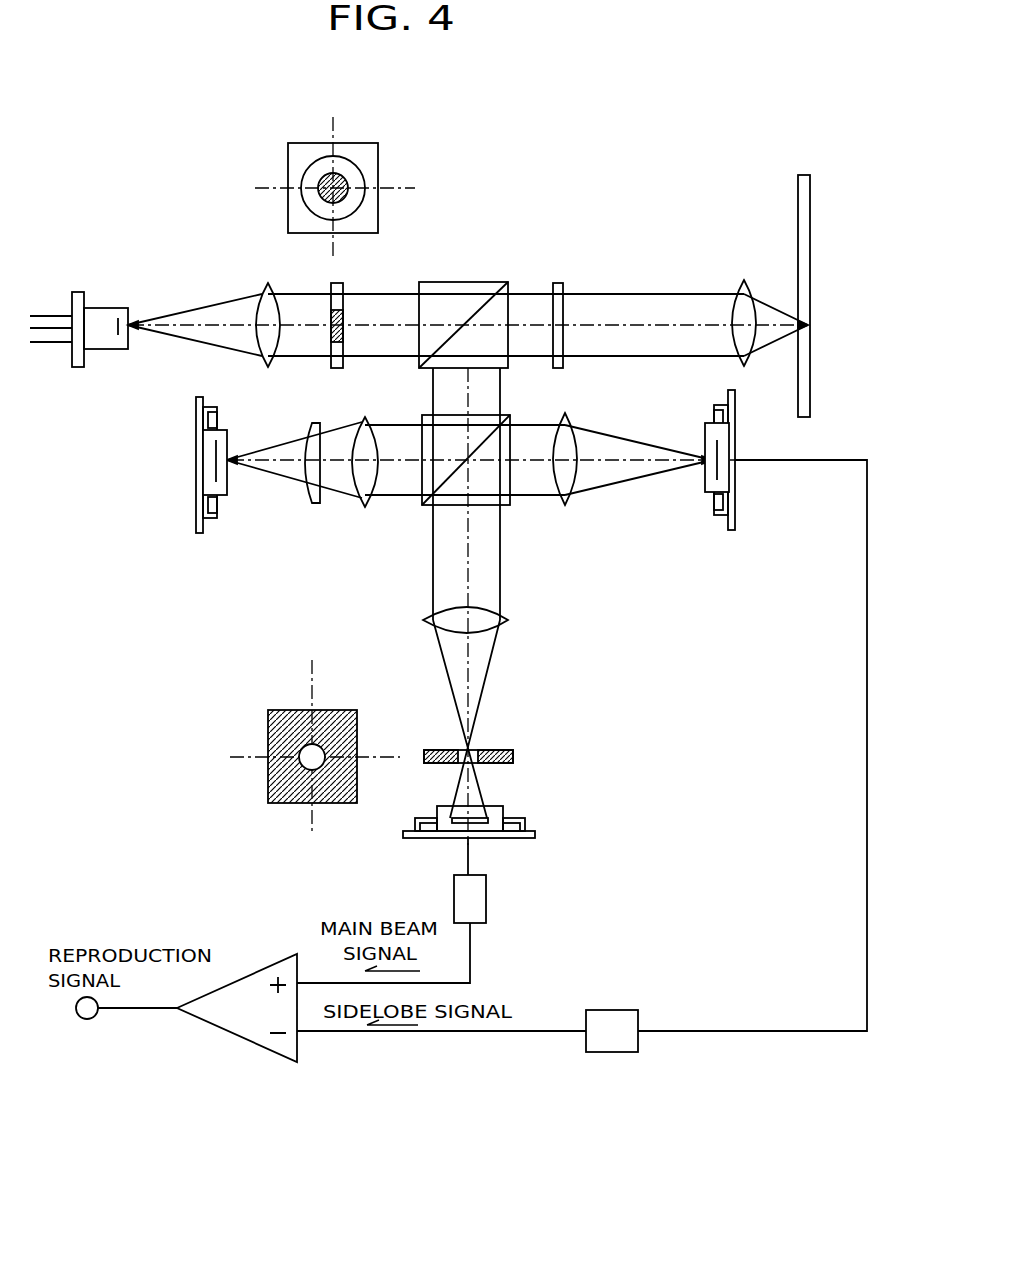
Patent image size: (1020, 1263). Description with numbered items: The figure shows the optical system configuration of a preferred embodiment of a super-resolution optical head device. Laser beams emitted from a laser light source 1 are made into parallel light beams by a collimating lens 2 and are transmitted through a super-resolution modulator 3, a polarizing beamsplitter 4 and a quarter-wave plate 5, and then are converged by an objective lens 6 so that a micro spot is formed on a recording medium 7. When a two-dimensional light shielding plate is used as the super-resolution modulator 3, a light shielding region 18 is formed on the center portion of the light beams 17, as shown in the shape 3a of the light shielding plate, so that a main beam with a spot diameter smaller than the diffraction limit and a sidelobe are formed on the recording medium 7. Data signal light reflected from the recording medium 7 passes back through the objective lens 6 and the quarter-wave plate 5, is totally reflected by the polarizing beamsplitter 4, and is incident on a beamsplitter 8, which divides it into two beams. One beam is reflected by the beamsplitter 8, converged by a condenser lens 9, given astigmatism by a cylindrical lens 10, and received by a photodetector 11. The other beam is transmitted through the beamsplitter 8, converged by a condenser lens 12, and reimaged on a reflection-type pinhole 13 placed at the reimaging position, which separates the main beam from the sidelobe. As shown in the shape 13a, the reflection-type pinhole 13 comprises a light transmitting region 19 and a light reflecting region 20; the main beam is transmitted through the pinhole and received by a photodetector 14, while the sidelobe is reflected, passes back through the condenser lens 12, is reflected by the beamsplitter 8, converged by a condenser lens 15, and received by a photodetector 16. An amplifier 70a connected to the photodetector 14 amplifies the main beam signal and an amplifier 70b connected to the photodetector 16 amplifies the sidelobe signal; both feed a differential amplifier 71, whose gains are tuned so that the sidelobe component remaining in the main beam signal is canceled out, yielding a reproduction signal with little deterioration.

The laser light source 1 is at (82, 292).
The collimating lens 2 is at (262, 290).
The super-resolution modulator 3 is at (333, 283).
The shape of the light shielding plate 3a is at (328, 169).
The light beams 17 is at (303, 182).
The light shielding region 18 is at (325, 178).
The polarizing beamsplitter 4 is at (466, 282).
The quarter-wave plate 5 is at (562, 283).
The objective lens 6 is at (742, 280).
The recording medium 7 is at (812, 276).
The beamsplitter 8 is at (508, 505).
The condenser lens 9 is at (365, 507).
The cylindrical lens 10 is at (313, 503).
The photodetector 11 is at (205, 462).
The condenser lens 12 is at (508, 620).
The reflection-type pinhole 13 is at (513, 757).
The shape of the reflection-type pinhole 13a is at (282, 760).
The light transmitting region 19 is at (315, 766).
The light reflecting region 20 is at (280, 803).
The photodetector 14 is at (500, 810).
The condenser lens 15 is at (568, 503).
The photodetector 16 is at (740, 520).
The amplifier 70a is at (482, 905).
The amplifier 70b is at (602, 1053).
The differential amplifier 71 is at (227, 1023).